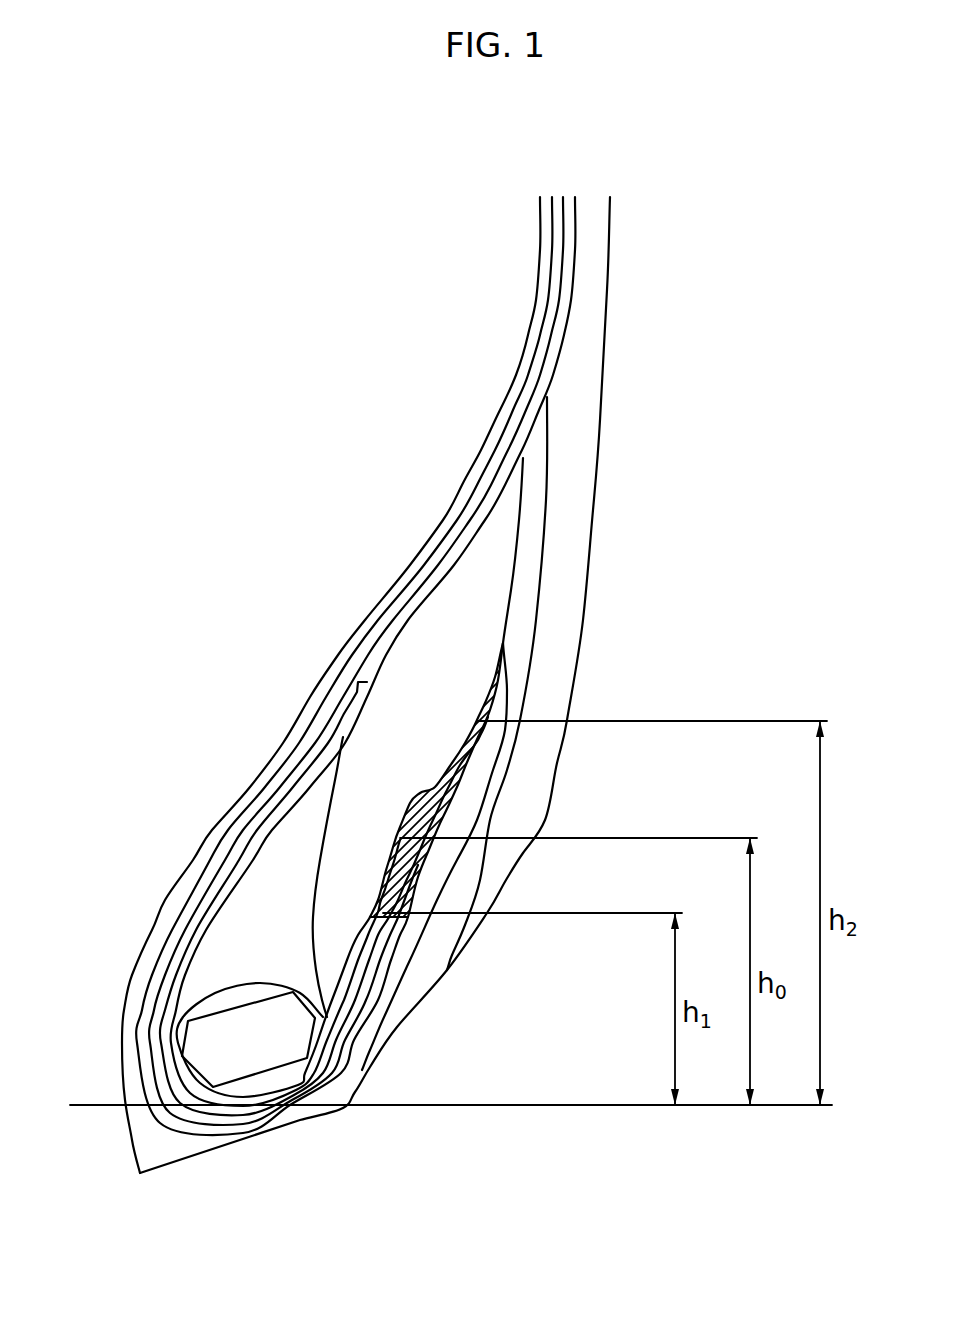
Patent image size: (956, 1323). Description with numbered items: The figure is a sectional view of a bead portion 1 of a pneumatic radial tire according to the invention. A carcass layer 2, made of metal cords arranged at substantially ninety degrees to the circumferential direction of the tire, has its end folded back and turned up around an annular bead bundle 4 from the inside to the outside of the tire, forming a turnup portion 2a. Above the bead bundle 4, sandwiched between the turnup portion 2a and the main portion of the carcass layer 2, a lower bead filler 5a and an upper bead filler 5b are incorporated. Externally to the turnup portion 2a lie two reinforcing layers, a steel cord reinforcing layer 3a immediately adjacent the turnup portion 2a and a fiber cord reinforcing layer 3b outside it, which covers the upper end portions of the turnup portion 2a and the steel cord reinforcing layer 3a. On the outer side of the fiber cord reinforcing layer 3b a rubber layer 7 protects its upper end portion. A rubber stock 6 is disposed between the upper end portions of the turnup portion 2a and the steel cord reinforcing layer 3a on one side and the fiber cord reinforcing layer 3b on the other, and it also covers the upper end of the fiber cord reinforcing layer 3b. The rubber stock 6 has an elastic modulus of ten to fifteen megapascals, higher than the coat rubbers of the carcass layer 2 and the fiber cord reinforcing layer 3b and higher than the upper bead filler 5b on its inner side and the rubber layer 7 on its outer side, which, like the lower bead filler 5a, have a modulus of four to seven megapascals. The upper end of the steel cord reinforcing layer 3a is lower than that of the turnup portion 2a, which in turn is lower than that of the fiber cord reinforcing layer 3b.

The bead portion 1 is at (176, 814).
The carcass layer 2 is at (413, 630).
The turnup portion 2a is at (370, 937).
The steel cord reinforcing layer 3a is at (347, 1027).
The fiber cord reinforcing layer 3b is at (460, 768).
The annular bead bundle 4 is at (203, 1043).
The lower bead filler 5a is at (253, 912).
The upper bead filler 5b is at (427, 678).
The rubber stock 6 is at (420, 792).
The rubber layer 7 is at (527, 607).